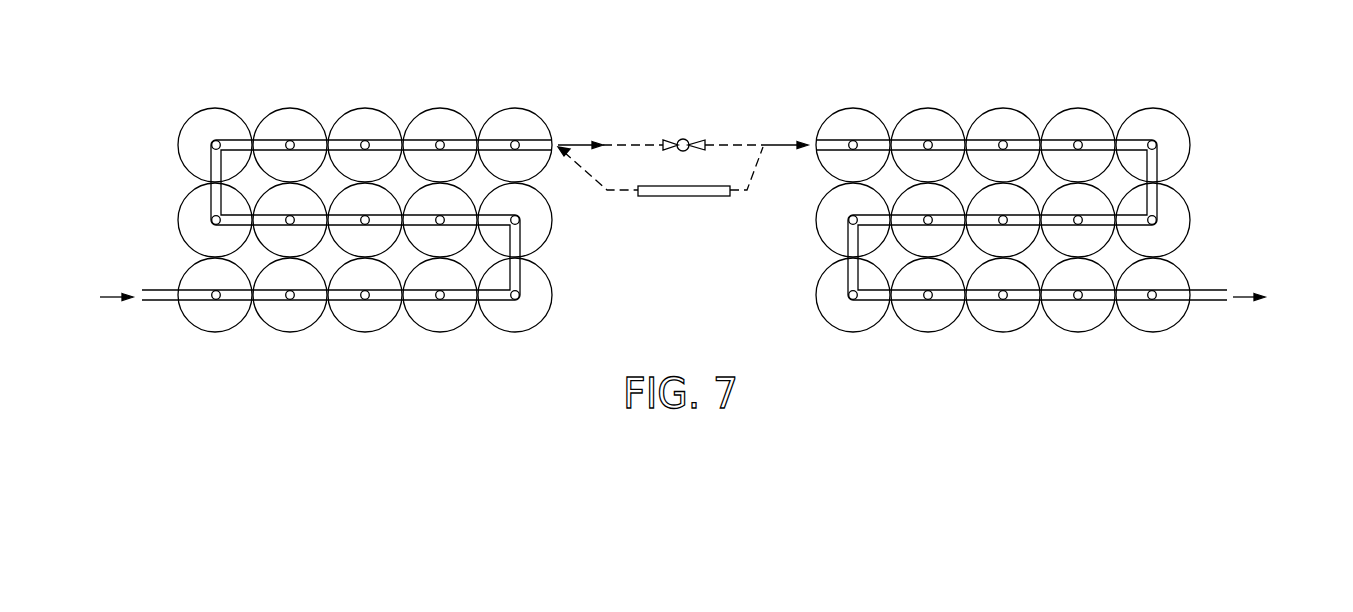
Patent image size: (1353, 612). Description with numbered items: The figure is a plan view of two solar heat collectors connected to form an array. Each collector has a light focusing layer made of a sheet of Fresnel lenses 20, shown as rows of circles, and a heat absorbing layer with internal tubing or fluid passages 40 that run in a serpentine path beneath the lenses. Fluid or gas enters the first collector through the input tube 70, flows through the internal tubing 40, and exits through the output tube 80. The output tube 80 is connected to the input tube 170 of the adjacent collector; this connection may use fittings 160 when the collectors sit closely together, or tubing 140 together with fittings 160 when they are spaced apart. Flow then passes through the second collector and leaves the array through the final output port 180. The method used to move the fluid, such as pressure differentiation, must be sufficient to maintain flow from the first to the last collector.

The Fresnel lenses 20 is at (198, 120).
The internal tubing or fluid passages 40 is at (204, 163).
The input tube 70 is at (108, 297).
The output tube 80 is at (575, 146).
The tubing 140 is at (677, 196).
The fittings 160 is at (683, 138).
The input tube 170 is at (777, 146).
The final output port 180 is at (1242, 297).